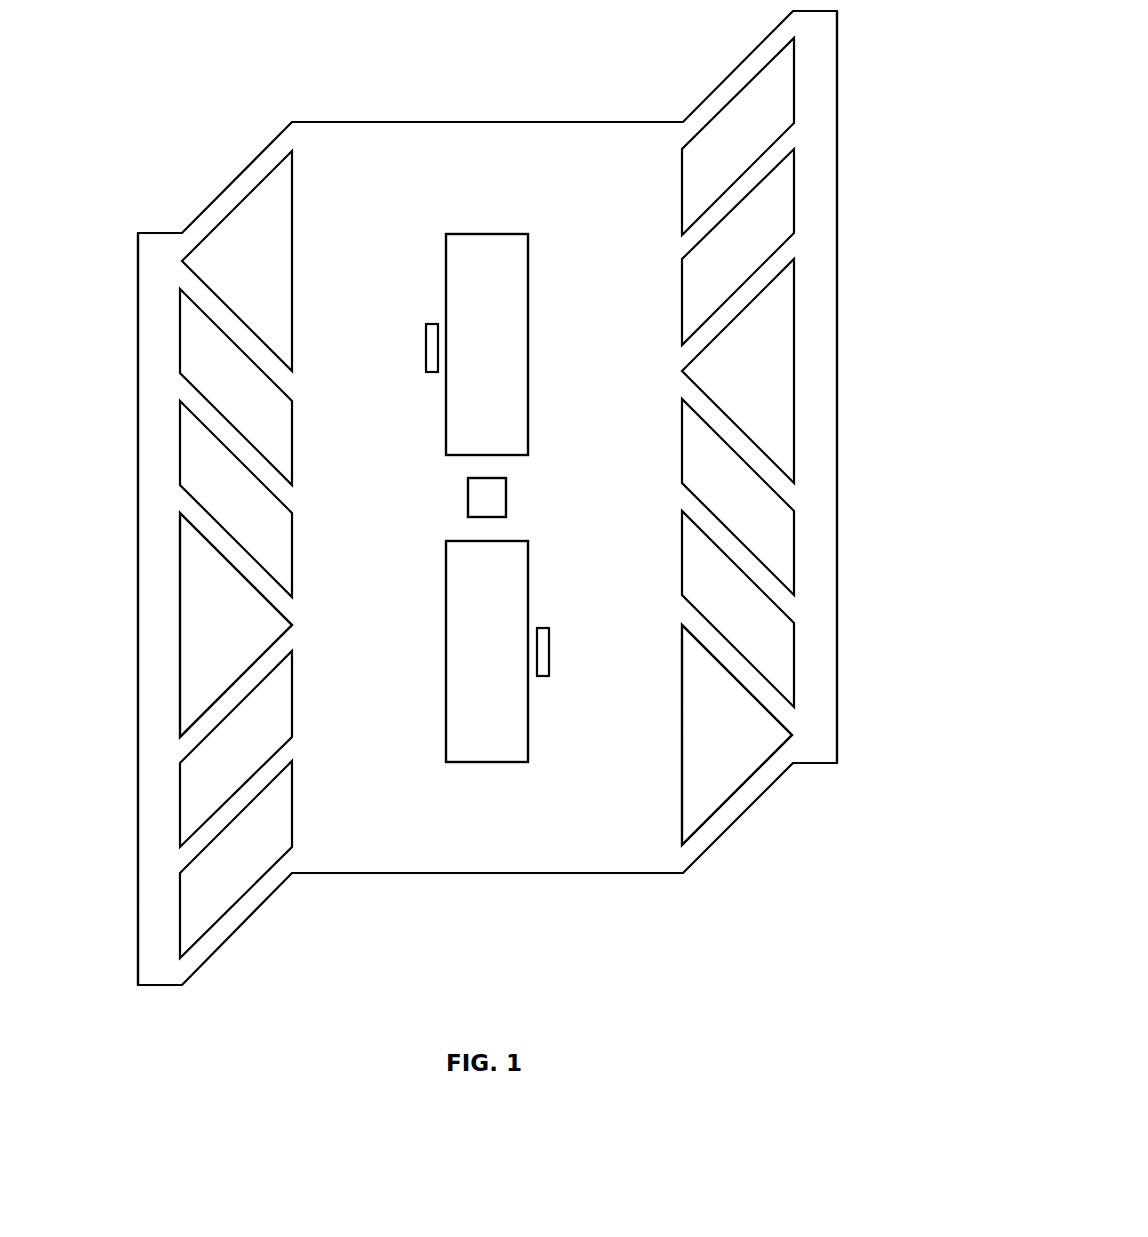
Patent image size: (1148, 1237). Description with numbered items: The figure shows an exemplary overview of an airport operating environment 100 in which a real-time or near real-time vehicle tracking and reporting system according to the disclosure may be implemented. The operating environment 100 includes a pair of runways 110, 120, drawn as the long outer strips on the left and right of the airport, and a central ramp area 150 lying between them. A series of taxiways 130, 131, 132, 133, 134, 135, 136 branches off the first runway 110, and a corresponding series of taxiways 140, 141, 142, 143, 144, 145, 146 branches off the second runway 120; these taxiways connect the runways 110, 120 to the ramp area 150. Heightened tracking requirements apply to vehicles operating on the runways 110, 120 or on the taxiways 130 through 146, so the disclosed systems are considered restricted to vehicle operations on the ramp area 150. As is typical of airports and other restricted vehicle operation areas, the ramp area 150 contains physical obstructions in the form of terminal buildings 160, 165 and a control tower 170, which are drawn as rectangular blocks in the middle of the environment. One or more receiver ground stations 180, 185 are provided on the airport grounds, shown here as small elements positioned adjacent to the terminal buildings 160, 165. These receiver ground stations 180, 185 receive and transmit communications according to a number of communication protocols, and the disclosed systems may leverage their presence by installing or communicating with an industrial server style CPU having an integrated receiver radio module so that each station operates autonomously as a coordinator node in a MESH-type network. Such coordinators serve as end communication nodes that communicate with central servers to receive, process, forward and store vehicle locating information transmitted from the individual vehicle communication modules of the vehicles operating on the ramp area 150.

The airport operating environment 100 is at (178, 92).
The runway 110 is at (158, 624).
The runway 120 is at (816, 373).
The taxiway 130 is at (286, 142).
The taxiway 131 is at (286, 381).
The taxiway 132 is at (286, 492).
The taxiway 133 is at (286, 603).
The taxiway 134 is at (286, 645).
The taxiway 135 is at (286, 757).
The taxiway 136 is at (286, 860).
The taxiway 140 is at (690, 855).
The taxiway 141 is at (690, 617).
The taxiway 142 is at (690, 504).
The taxiway 143 is at (690, 394).
The taxiway 144 is at (690, 353).
The taxiway 145 is at (690, 240).
The taxiway 146 is at (690, 136).
The ramp area 150 is at (488, 179).
The terminal building 160 is at (487, 344).
The terminal building 165 is at (487, 651).
The control tower 170 is at (488, 498).
The receiver ground station 180 is at (432, 345).
The receiver ground station 185 is at (544, 652).